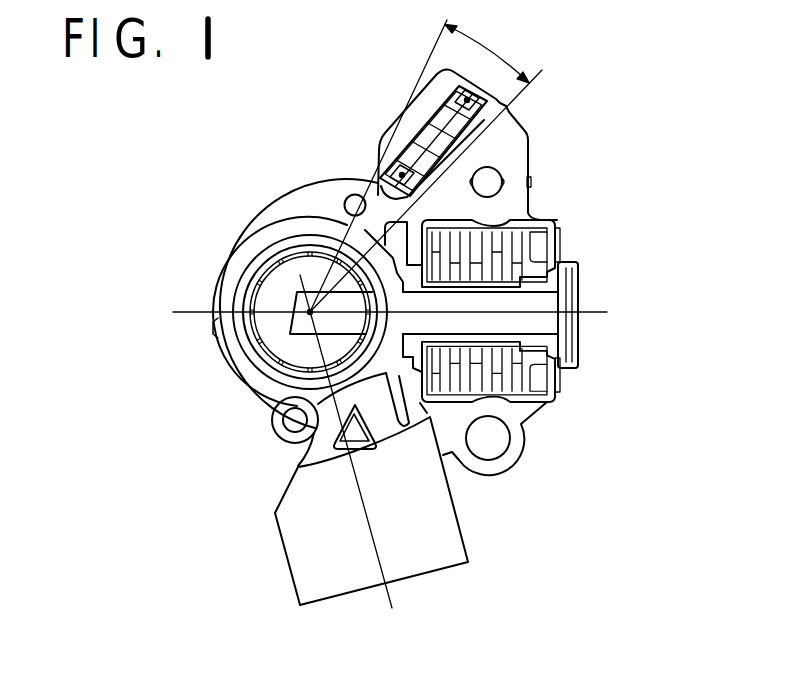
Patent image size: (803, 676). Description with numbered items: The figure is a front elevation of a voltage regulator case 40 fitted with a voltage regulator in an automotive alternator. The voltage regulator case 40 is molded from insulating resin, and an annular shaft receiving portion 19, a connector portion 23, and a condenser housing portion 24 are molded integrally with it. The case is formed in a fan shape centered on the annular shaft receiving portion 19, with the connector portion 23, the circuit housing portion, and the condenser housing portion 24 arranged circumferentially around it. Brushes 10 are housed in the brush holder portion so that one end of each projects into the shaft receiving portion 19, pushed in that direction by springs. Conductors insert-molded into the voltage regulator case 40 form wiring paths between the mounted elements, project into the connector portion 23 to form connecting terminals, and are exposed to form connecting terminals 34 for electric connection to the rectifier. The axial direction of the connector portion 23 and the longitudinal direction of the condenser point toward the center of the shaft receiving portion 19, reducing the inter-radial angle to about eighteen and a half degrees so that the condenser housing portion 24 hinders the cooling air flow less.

The brushes 10 is at (307, 322).
The annular shaft receiving portion 19 is at (243, 258).
The connector portion 23 is at (467, 518).
The condenser housing portion 24 is at (408, 122).
The connecting terminals 34 is at (340, 197).
The voltage regulator case 40 is at (531, 203).